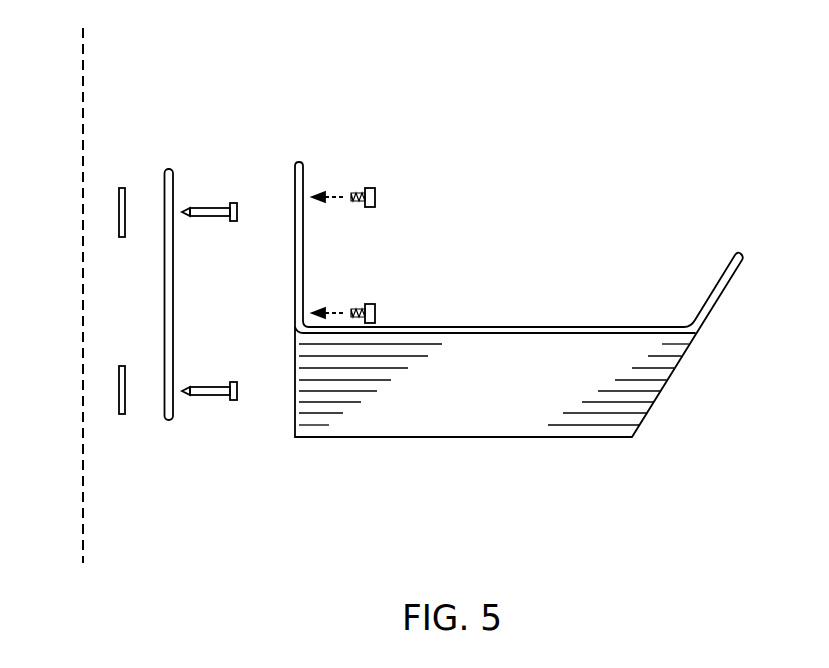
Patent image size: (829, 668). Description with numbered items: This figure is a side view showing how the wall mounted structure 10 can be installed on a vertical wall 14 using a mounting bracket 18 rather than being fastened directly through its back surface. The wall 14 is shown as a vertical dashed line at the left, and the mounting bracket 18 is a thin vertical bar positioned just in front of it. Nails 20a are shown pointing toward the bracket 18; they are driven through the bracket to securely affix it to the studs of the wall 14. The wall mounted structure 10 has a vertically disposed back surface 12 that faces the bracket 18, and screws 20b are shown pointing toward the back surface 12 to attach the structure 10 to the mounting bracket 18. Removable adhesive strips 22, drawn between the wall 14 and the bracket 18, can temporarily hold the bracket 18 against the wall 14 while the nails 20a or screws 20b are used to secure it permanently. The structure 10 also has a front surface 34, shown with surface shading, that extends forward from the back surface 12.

The wall mounted structure 10 is at (624, 93).
The back surface 12 is at (519, 299).
The vertical wall 14 is at (116, 295).
The mounting bracket 18 is at (200, 276).
The nails 20a is at (236, 351).
The screws 20b is at (376, 231).
The removable adhesive strips 22 is at (71, 299).
The front surface 34 is at (526, 384).